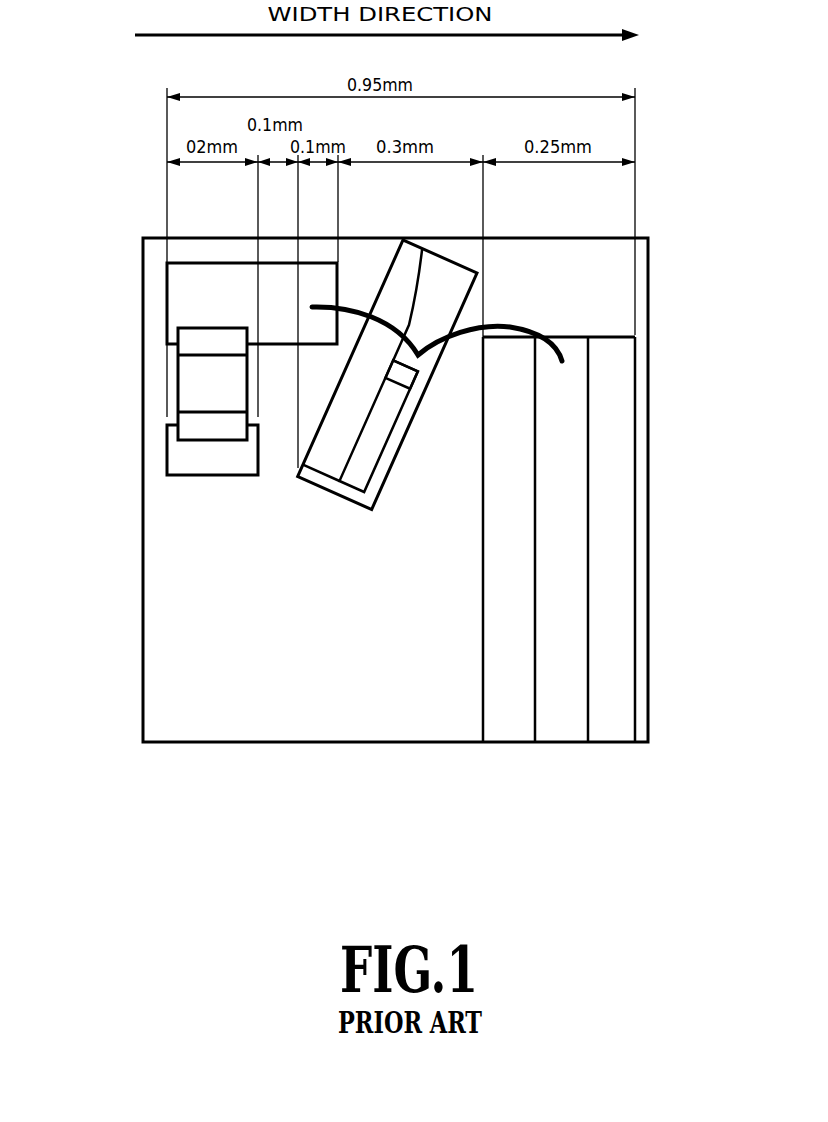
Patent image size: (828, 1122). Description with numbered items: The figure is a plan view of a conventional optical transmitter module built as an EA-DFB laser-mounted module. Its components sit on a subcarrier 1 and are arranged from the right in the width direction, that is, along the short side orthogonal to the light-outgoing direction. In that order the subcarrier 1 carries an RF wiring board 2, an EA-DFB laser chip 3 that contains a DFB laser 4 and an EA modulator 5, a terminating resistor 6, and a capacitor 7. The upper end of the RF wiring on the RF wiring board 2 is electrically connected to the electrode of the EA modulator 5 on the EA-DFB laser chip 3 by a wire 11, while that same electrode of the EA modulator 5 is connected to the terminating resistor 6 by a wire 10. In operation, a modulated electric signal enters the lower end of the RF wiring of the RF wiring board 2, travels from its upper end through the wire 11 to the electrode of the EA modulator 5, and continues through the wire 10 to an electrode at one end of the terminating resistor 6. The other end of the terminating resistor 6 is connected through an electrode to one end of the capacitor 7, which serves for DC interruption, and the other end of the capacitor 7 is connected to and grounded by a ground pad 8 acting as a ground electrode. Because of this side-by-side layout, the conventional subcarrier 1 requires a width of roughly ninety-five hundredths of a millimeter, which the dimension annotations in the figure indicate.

The subcarrier 1 is at (393, 708).
The RF wiring board 2 is at (508, 708).
The EA-DFB laser chip 3 is at (322, 466).
The DFB laser 4 is at (365, 465).
The EA modulator 5 is at (427, 363).
The terminating resistor 6 is at (283, 305).
The capacitor 7 is at (183, 382).
The ground pad 8 is at (182, 453).
The wire 10 is at (365, 305).
The wire 11 is at (533, 323).